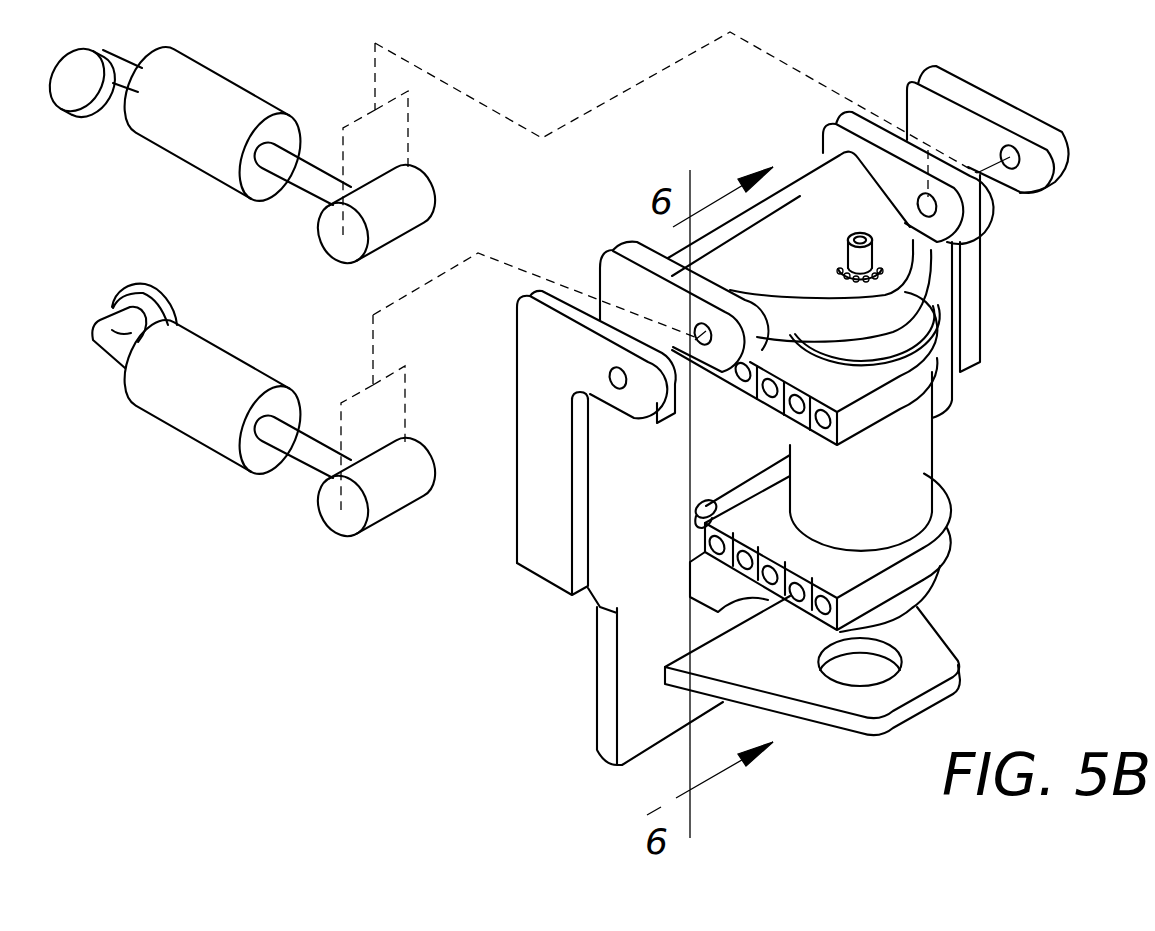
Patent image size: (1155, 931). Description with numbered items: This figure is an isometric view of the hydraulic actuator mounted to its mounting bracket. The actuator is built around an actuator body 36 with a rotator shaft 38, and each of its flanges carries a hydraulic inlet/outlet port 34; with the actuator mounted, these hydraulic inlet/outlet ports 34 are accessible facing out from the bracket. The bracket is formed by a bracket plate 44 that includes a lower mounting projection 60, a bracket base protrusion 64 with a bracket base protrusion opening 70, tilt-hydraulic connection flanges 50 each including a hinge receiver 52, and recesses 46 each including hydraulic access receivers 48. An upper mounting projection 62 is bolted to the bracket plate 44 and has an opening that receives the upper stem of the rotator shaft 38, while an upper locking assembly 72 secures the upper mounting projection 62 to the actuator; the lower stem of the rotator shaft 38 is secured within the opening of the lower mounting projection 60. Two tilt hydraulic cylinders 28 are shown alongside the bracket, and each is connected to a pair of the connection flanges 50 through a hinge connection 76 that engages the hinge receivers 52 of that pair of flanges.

The tilt hydraulic cylinder 28 is at (237, 197).
The hinge connection 76 is at (318, 234).
The tilt-hydraulic connection flange 50 is at (600, 280).
The hinge receiver 52 is at (609, 378).
The upper mounting projection 62 is at (870, 218).
The rotator shaft 38 is at (855, 241).
The upper locking assembly 72 is at (842, 269).
The hydraulic inlet/outlet port 34 is at (768, 390).
The actuator body 36 is at (933, 450).
The bracket plate 44 is at (647, 469).
The recess 46 is at (747, 490).
The hydraulic access receiver 48 is at (703, 504).
The lower mounting projection 60 is at (697, 582).
The bracket base protrusion opening 70 is at (843, 665).
The bracket base protrusion 64 is at (960, 661).